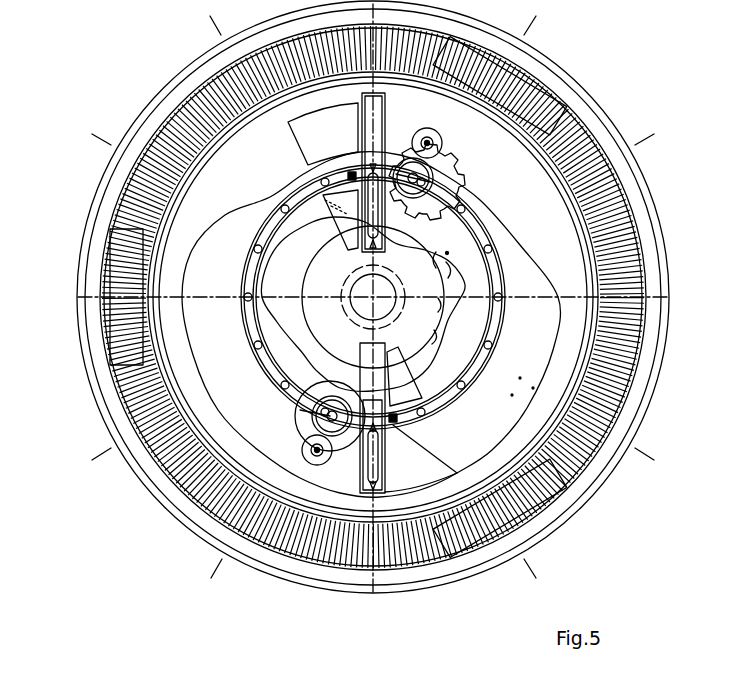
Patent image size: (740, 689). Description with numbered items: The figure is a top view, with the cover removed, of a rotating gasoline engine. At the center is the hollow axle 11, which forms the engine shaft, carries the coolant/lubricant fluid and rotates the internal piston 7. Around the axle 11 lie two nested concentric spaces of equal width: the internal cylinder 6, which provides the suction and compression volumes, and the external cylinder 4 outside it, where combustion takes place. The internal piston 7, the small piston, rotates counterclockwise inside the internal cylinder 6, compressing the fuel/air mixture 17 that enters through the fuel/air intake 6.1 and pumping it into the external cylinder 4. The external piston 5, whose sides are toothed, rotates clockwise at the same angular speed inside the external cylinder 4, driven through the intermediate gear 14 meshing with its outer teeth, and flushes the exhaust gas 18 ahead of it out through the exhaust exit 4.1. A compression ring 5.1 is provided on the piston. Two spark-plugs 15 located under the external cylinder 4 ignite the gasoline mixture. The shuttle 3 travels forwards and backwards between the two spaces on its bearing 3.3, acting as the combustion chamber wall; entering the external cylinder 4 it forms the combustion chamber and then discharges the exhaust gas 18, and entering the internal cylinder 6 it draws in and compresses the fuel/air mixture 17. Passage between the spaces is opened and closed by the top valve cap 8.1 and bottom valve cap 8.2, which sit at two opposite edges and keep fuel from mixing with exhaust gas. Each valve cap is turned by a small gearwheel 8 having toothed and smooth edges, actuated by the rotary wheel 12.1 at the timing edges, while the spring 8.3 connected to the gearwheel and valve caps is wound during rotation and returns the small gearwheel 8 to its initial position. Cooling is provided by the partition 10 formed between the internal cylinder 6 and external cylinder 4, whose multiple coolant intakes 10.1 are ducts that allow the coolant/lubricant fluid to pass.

The shuttle 3 is at (360, 476).
The bearing 3.3 is at (386, 105).
The external cylinder 4 is at (218, 341).
The exhaust exit 4.1 is at (348, 134).
The external piston 5 is at (288, 168).
The compression ring 5.1 is at (380, 246).
The internal cylinder 6 is at (466, 220).
The fuel/air intake 6.1 is at (339, 208).
The internal piston 7 is at (296, 356).
The small gearwheel 8 is at (456, 188).
The top valve cap 8.1 is at (401, 154).
The bottom valve cap 8.2 is at (304, 420).
The spring 8.3 is at (438, 142).
The partition 10 is at (496, 274).
The coolant intake 10.1 is at (490, 338).
The axle 11 is at (373, 297).
The rotary wheel 12.1 is at (413, 363).
The intermediate gear 14 is at (553, 88).
The spark-plug 15 is at (436, 134).
The fuel/air mixture 17 is at (460, 270).
The exhaust gas 18 is at (519, 398).